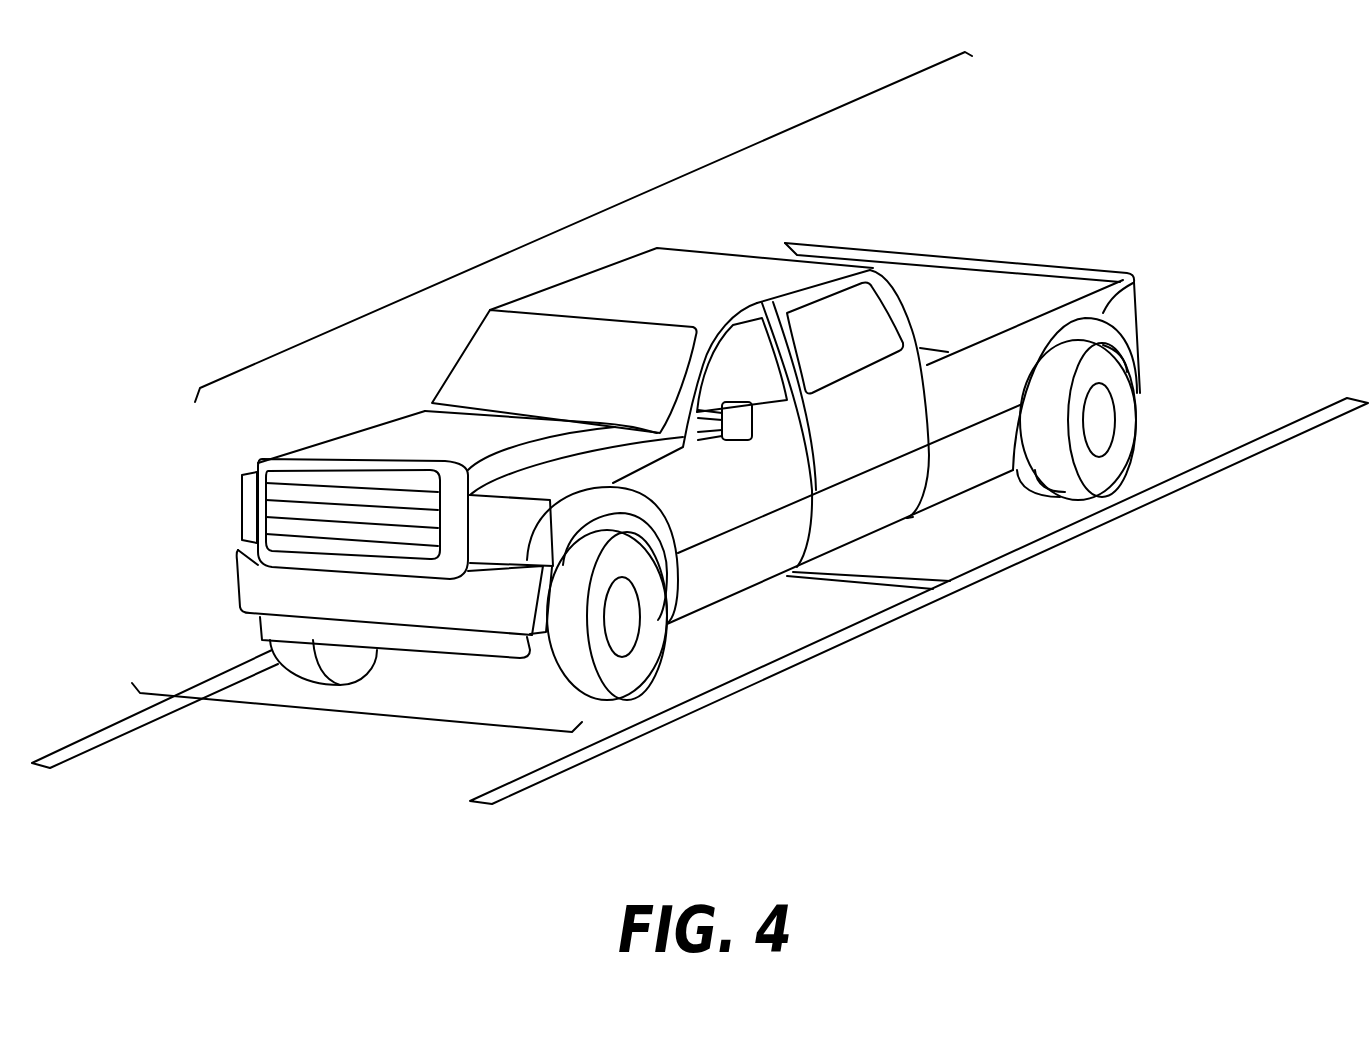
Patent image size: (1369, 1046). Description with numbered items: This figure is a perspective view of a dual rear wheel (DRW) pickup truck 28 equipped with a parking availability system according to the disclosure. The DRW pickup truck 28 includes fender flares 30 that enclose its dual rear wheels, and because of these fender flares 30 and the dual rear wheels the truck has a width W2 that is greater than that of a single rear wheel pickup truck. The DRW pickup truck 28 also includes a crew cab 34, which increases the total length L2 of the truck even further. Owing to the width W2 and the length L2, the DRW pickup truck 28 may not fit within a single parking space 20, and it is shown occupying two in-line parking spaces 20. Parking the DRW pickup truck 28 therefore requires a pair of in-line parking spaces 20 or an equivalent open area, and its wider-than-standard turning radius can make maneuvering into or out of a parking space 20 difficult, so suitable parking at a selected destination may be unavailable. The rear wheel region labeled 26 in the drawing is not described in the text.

The parking space 20 is at (712, 432).
The rear wheel 26 is at (1083, 493).
The dual rear wheel (DRW) pickup truck 28 is at (1015, 258).
The fender flares 30 is at (1108, 297).
The crew cab 34 is at (890, 284).
The total length L2 is at (629, 197).
The width W2 is at (342, 712).